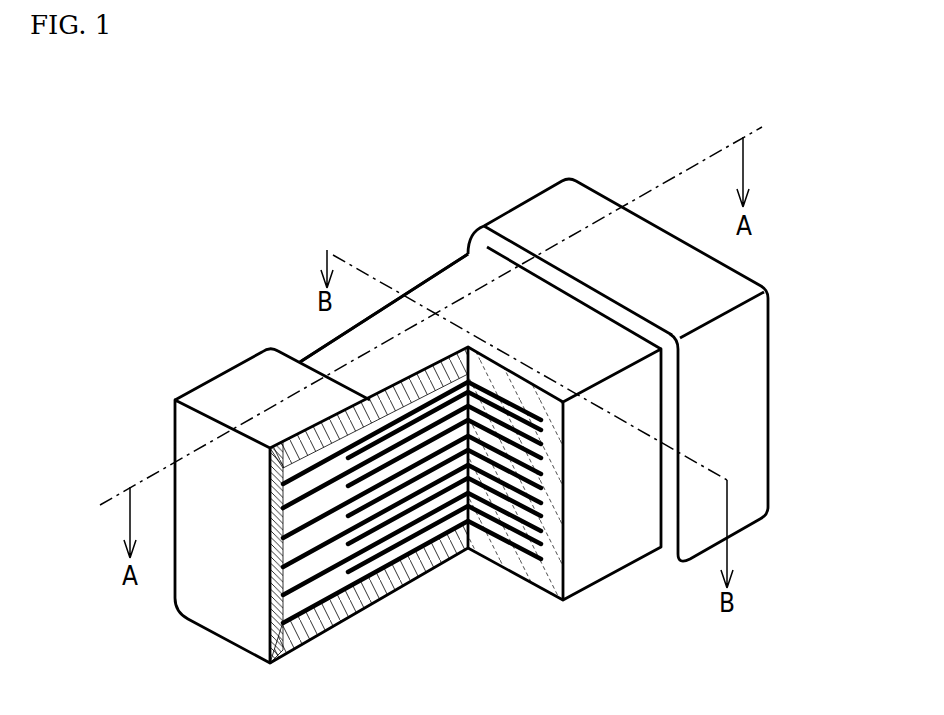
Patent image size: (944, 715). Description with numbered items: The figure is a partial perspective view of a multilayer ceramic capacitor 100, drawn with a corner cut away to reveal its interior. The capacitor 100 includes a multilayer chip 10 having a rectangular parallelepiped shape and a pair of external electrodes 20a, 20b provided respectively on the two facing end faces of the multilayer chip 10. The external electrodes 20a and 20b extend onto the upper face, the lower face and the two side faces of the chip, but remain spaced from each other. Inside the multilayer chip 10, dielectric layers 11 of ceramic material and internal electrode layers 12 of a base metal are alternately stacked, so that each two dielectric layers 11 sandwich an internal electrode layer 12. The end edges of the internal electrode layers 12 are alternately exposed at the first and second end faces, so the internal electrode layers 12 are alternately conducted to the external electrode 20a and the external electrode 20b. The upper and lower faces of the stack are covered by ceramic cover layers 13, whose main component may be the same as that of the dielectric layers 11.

The multilayer ceramic capacitor 100 is at (867, 112).
The multilayer chip 10 is at (437, 454).
The dielectric layer 11 is at (390, 557).
The internal electrode layer 12 is at (443, 565).
The cover layer 13 is at (437, 285).
The external electrode 20a is at (207, 387).
The external electrode 20b is at (526, 217).